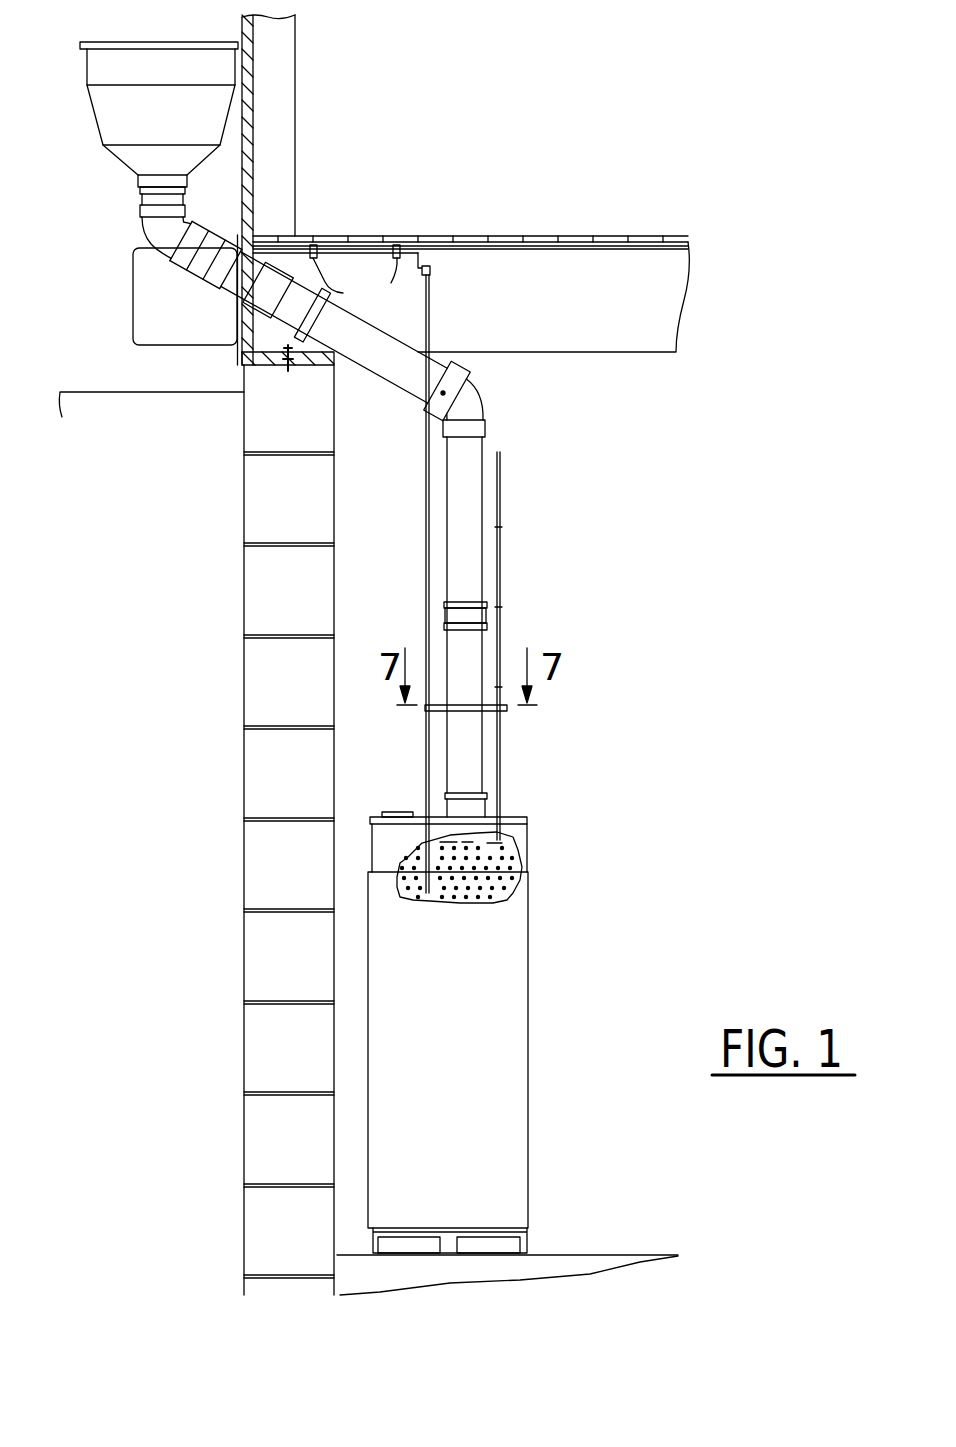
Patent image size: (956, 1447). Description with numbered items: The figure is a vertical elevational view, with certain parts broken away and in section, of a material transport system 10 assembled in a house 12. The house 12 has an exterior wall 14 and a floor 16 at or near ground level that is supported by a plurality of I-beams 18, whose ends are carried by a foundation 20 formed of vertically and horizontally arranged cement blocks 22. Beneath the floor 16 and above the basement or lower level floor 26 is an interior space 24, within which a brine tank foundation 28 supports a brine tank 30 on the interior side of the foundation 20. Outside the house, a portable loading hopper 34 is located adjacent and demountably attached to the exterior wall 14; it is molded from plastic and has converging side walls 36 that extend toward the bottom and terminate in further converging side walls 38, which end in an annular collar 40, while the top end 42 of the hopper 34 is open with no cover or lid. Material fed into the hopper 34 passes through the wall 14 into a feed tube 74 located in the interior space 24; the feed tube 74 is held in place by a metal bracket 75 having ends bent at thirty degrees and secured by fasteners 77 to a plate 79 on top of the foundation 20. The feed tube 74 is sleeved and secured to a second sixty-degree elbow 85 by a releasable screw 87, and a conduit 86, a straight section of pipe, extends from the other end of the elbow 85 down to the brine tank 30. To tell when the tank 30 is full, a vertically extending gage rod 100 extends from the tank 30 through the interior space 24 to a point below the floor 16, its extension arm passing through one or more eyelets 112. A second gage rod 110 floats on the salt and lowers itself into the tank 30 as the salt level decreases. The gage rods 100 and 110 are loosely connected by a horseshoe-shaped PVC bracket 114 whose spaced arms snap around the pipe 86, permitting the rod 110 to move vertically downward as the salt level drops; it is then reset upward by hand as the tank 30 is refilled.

The material transport system 10 is at (112, 227).
The house 12 is at (190, 573).
The exterior wall 14 is at (240, 37).
The floor 16 is at (605, 236).
The I-beams 18 is at (672, 292).
The foundation 20 is at (245, 950).
The cement blocks 22 is at (257, 777).
The interior space 24 is at (688, 647).
The lower level floor 26 is at (578, 1260).
The brine tank foundation 28 is at (527, 1236).
The brine tank 30 is at (528, 963).
The portable loading hopper 34 is at (97, 67).
The converging side walls 36 is at (98, 130).
The converging side walls 38 is at (123, 163).
The annular collar 40 is at (166, 175).
The top end 42 is at (121, 46).
The feed tube 74 is at (398, 373).
The metal bracket 75 is at (300, 338).
The fasteners 77 is at (288, 366).
The plate 79 is at (257, 362).
The second 60° elbow 85 is at (477, 402).
The conduit 86 is at (476, 503).
The releasable screw 87 is at (447, 387).
The gage rod 100 is at (426, 487).
The gage rod 110 is at (503, 567).
The eyelets 112 is at (355, 278).
The bracket 114 is at (505, 711).